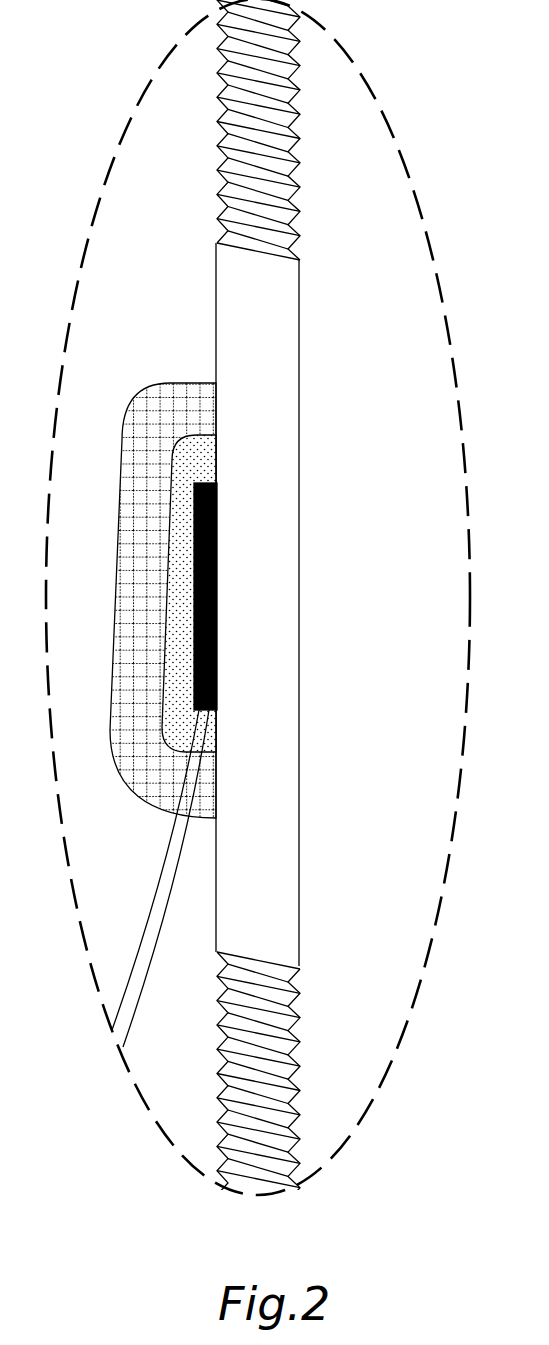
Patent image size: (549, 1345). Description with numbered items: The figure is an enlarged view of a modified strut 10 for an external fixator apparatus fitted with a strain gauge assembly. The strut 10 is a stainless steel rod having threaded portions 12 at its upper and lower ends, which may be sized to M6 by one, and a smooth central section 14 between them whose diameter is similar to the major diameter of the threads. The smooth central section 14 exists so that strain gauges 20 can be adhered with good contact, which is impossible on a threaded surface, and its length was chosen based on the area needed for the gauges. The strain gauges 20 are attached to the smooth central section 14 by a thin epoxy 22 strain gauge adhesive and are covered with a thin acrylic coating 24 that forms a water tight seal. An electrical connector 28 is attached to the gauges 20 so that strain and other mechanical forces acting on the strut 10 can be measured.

The strut 10 is at (353, 108).
The threaded portion 12 is at (293, 158).
The smooth central section 14 is at (282, 492).
The strain gauge 20 is at (219, 572).
The epoxy 22 is at (212, 452).
The acrylic coating 24 is at (128, 564).
The electrical connector 28 is at (166, 873).